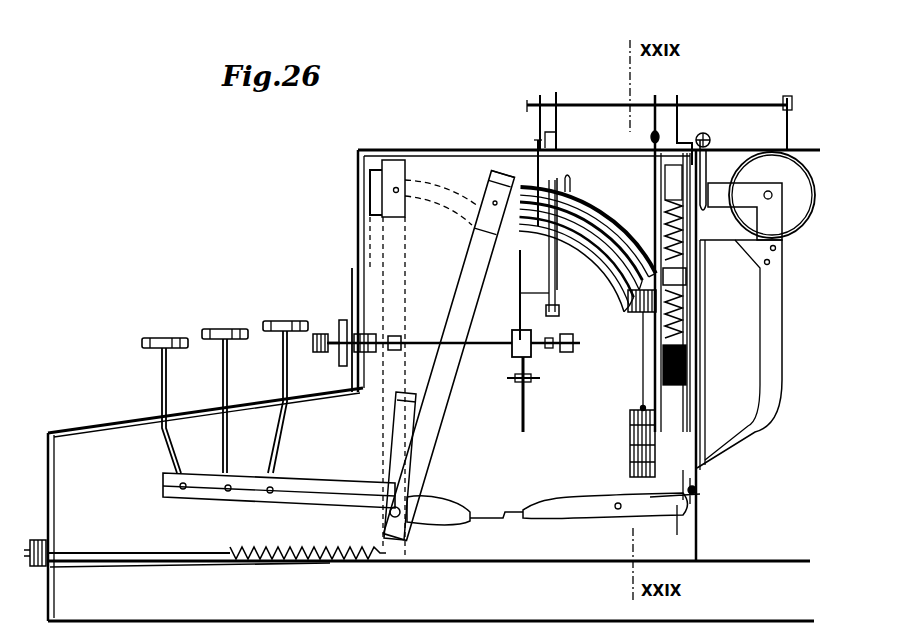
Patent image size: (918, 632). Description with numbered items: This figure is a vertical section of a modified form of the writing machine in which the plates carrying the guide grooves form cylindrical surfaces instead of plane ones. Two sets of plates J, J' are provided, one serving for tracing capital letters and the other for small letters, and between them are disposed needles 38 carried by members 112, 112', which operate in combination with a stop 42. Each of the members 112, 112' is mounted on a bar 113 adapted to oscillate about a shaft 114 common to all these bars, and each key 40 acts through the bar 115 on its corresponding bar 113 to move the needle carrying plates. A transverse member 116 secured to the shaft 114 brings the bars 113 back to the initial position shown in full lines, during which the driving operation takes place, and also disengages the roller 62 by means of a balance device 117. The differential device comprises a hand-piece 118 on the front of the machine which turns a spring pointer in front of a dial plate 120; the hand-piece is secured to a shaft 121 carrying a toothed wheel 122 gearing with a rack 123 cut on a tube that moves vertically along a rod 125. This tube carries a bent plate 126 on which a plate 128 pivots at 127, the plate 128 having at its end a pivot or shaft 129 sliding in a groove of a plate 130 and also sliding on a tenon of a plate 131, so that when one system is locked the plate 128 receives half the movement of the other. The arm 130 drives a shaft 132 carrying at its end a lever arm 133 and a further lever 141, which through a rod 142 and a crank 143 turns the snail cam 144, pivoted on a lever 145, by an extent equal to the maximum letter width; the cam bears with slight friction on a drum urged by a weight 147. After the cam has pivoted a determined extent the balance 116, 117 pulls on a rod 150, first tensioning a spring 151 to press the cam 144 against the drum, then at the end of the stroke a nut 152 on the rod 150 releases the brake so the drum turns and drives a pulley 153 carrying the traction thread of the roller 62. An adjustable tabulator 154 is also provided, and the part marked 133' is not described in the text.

The key 40 is at (222, 331).
The hand-piece 118 is at (318, 334).
The dial plate 120 is at (351, 283).
The stop 42 is at (372, 212).
The needle carrying member 112' is at (451, 207).
The shaft 121 is at (449, 356).
The bar 113 is at (425, 421).
The transverse member 116 is at (400, 421).
The shaft 114 is at (388, 511).
The bar 115 is at (310, 484).
The balance device 117 is at (562, 515).
The rack 123 is at (518, 356).
The toothed wheel 122 is at (530, 345).
The rod 125 is at (521, 413).
The plate 131 is at (588, 232).
The needle carrying member 112 is at (586, 257).
The pivot or shaft 129 is at (540, 206).
The plate 128 is at (548, 273).
The bent plate 126 is at (530, 304).
The pivot 127 is at (559, 311).
The needles 38 is at (614, 314).
The weight 147 is at (629, 437).
The shaft 132 is at (581, 103).
The plate 130 is at (536, 112).
The lever 141 is at (680, 98).
The post 133' is at (746, 70).
The lever arm 133 is at (801, 114).
The rod 142 is at (652, 170).
The crank 143 is at (664, 214).
The nut 152 is at (690, 300).
The rod 150 is at (690, 349).
The spring 151 is at (692, 272).
The pulley 153 is at (708, 383).
The lever 145 is at (692, 212).
The adjustable tabulator 154 is at (712, 141).
The snail cam 144 is at (676, 177).
The roller 62 is at (793, 228).
The set of plates J is at (500, 253).
The set of plates J' is at (640, 238).